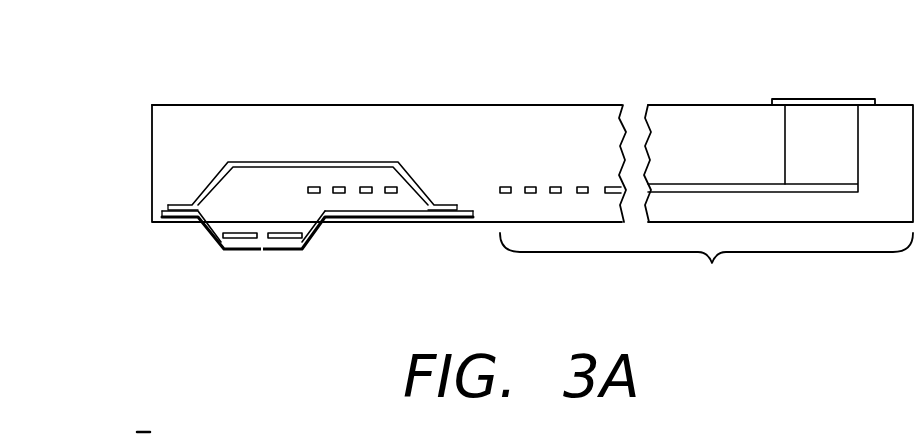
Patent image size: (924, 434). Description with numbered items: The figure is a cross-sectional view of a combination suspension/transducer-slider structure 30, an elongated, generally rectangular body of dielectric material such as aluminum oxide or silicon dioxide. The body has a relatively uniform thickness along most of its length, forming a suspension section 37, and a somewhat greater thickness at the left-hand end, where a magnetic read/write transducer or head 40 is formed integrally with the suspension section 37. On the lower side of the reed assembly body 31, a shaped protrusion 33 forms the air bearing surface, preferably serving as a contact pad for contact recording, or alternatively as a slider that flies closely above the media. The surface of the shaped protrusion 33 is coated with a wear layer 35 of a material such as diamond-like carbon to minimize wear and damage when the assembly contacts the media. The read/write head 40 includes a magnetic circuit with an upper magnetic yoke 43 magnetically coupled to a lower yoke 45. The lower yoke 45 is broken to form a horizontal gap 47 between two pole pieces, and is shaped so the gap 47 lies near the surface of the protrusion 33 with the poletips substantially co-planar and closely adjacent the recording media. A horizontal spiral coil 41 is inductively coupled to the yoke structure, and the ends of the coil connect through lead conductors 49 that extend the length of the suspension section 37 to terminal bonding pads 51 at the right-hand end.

The combination suspension/transducer-slider structure 30 is at (152, 63).
The reed assembly body 31 is at (291, 97).
The magnetic read/write transducer or head 40 is at (185, 147).
The upper magnetic yoke 43 is at (200, 200).
The horizontal spiral coil 41 is at (500, 187).
The lead conductors 49 is at (708, 184).
The terminal bonding pads 51 is at (822, 99).
The lower yoke 45 is at (217, 240).
The wear layer 35 is at (310, 238).
The horizontal gap 47 is at (263, 240).
The shaped protrusion 33 is at (208, 284).
The suspension section 37 is at (706, 267).